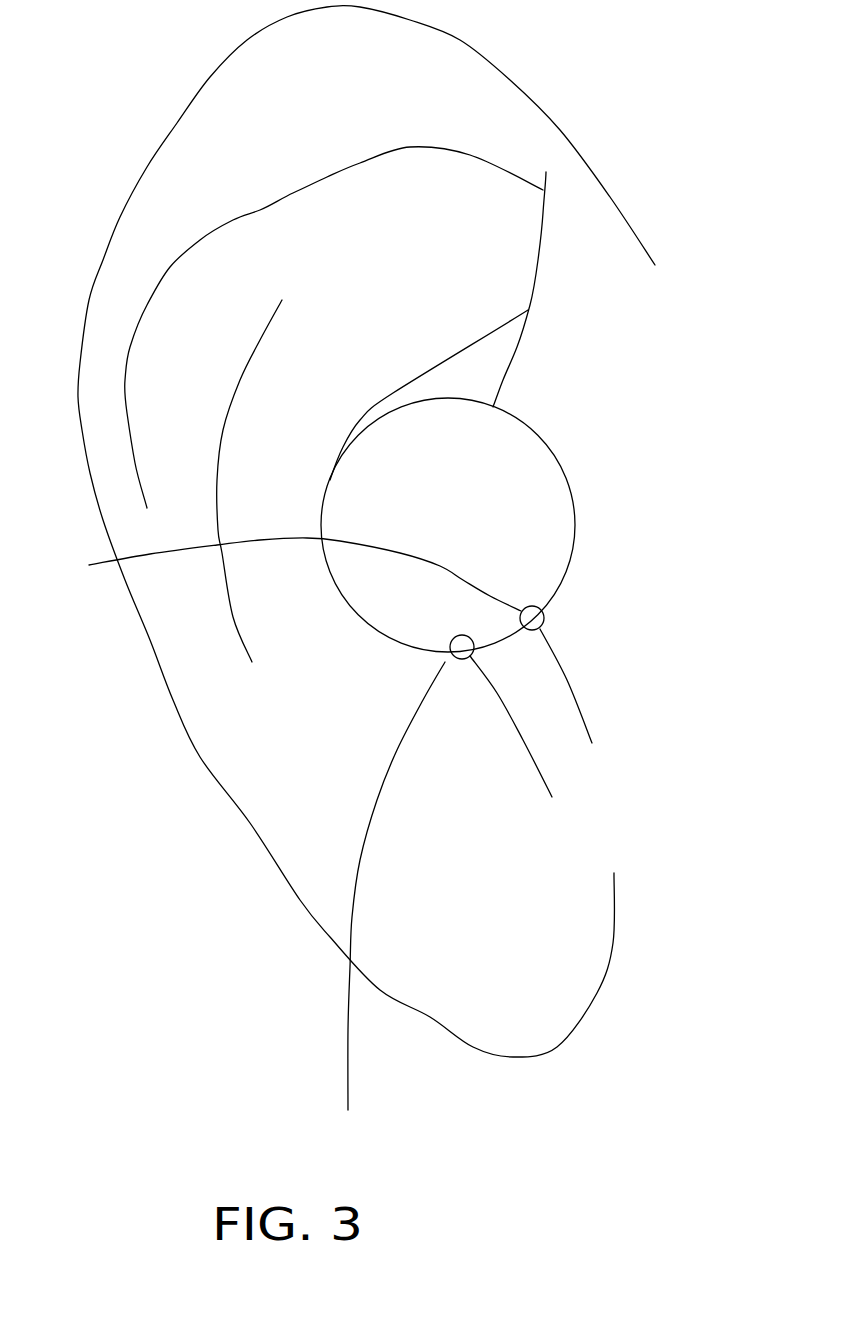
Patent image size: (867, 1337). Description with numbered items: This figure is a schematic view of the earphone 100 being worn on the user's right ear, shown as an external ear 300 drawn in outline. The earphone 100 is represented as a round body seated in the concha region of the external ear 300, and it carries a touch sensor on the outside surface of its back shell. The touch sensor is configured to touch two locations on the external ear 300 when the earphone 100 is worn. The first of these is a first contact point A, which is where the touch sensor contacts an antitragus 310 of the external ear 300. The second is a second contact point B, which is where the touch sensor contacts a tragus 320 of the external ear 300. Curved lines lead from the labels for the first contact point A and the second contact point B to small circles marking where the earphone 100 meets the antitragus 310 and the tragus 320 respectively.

The external ear 300 is at (592, 319).
The earphone 100 is at (539, 535).
The tragus 320 is at (547, 623).
The antitragus 310 is at (386, 909).
The first contact point A is at (451, 640).
The second contact point B is at (287, 574).